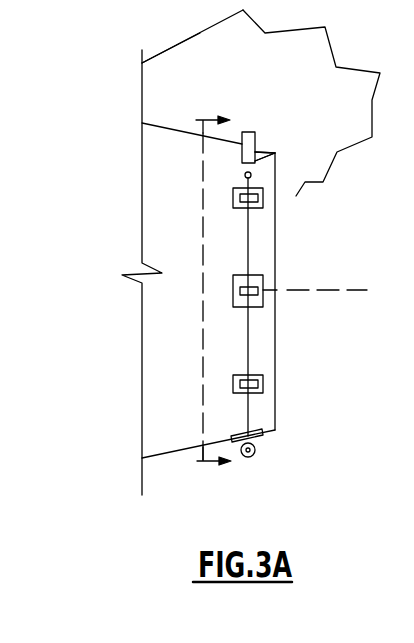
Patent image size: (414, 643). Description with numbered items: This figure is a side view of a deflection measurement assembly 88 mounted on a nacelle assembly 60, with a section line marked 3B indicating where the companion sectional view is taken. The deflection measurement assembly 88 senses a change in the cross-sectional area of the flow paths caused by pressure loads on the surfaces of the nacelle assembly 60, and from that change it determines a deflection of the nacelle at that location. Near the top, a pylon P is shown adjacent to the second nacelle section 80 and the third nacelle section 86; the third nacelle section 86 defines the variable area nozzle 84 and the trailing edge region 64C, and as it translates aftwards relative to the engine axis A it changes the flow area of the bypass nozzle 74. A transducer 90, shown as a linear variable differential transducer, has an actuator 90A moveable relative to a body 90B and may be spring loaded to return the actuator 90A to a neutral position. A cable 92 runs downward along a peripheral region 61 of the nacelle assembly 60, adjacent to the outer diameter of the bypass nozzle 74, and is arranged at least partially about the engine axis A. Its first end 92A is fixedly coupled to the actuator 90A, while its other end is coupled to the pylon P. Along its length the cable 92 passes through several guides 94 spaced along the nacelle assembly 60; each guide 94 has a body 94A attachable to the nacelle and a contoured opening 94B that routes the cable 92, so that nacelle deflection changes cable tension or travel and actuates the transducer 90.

The nacelle assembly 60 is at (109, 53).
The deflection measurement assembly 88 is at (171, 60).
The pylon P is at (322, 48).
The second nacelle section 80 is at (192, 107).
The third nacelle section 86 is at (163, 123).
The peripheral region 61 is at (231, 140).
The transducer 90 is at (255, 135).
The actuator 90A is at (258, 162).
The body 90B is at (256, 152).
The first end 92A is at (251, 177).
The cable 92 is at (250, 265).
The variable area nozzle 84 is at (263, 243).
The bypass nozzle 74 is at (277, 283).
The engine axis A is at (350, 292).
The guide 94 is at (253, 291).
The trailing edge region 64C is at (268, 435).
The body 94A is at (236, 457).
The contoured opening 94B is at (253, 457).
The section line 3B is at (206, 292).